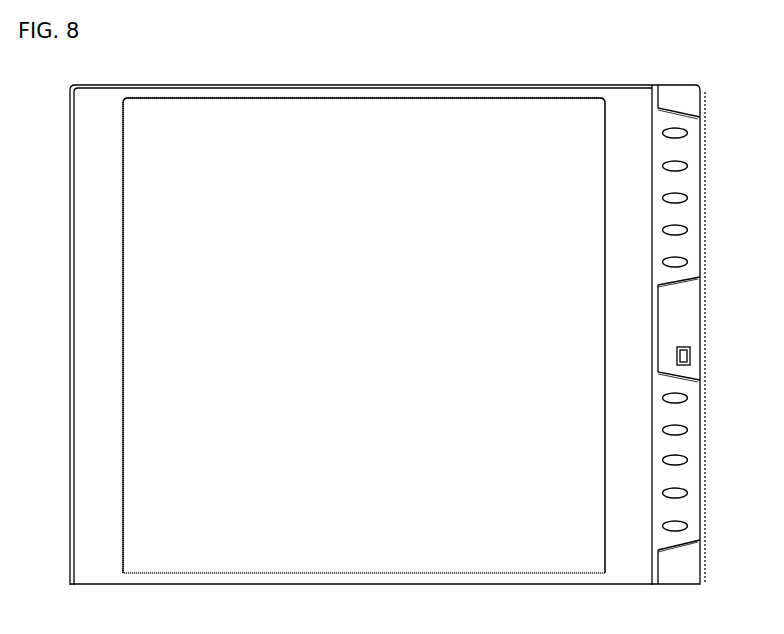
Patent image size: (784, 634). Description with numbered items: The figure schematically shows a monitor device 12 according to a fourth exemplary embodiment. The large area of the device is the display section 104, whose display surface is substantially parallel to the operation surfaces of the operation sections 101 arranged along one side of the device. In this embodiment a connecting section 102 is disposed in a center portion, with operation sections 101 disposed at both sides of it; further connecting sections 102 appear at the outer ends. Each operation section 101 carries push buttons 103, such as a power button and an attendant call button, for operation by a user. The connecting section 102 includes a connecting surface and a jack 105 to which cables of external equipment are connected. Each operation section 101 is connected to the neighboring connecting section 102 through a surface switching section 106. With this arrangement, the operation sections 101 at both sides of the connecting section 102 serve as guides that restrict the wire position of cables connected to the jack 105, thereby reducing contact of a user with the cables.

The monitor device 12 is at (603, 74).
The operation section 101 is at (687, 183).
The connecting section 102 is at (685, 97).
The push button 103 is at (677, 230).
The display section 104 is at (500, 532).
The jack 105 is at (692, 353).
The surface switching section 106 is at (698, 115).